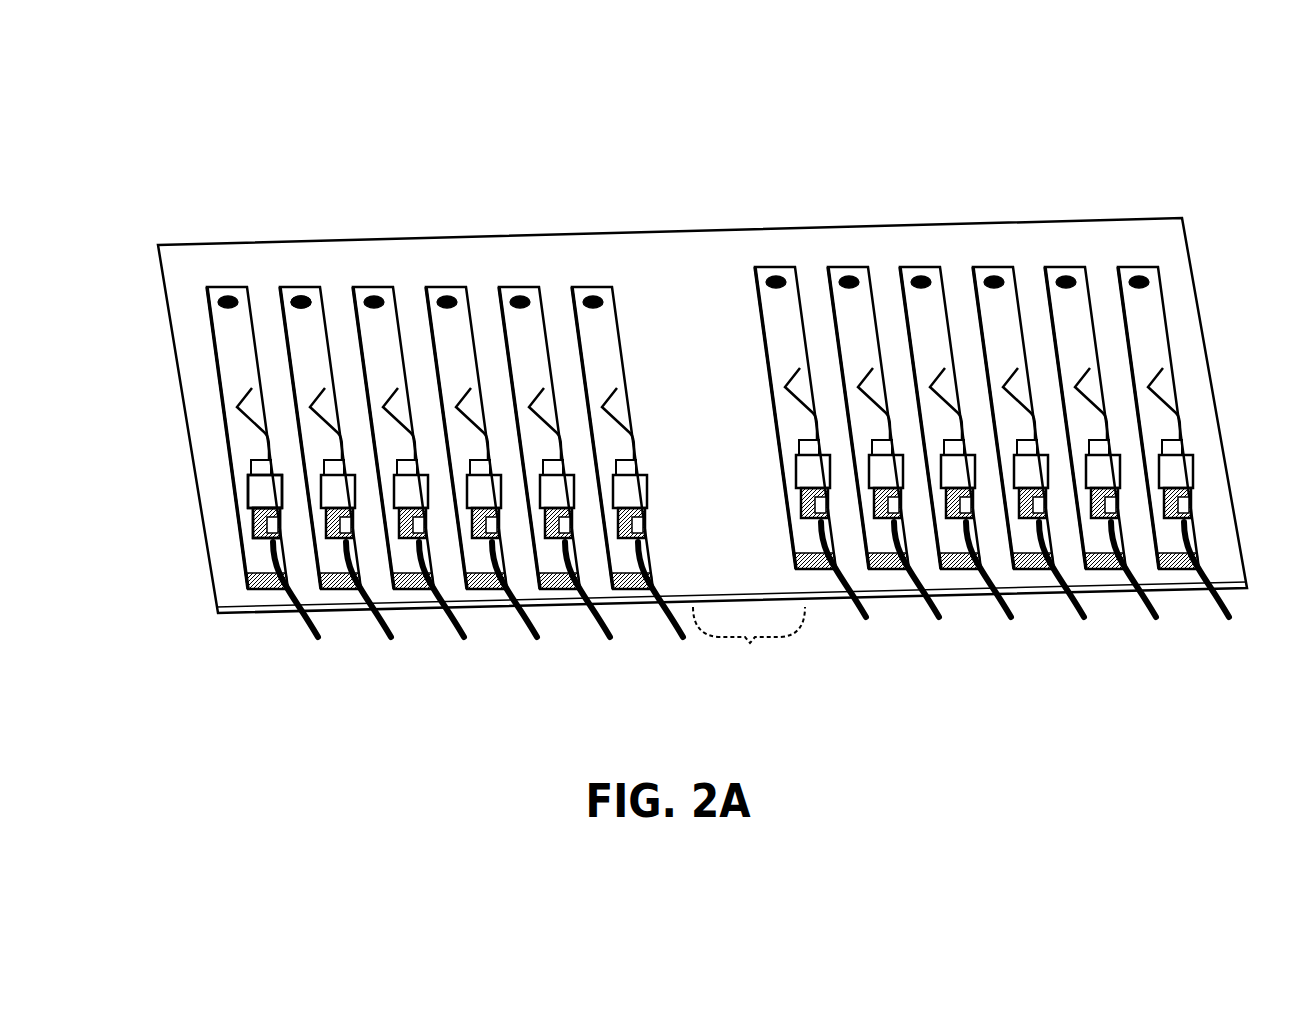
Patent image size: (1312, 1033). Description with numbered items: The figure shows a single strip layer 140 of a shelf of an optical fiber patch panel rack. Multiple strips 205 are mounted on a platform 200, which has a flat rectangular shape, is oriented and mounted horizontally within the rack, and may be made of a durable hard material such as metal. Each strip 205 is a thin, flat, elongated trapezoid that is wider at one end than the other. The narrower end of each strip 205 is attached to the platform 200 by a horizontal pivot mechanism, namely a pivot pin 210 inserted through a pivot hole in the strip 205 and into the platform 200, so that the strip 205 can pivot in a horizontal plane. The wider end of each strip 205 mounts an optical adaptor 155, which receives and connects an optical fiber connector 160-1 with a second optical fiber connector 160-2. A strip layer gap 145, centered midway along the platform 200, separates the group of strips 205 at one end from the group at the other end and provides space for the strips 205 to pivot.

The platform 200 is at (658, 233).
The strip 205 is at (184, 462).
The pivot pin 210 is at (305, 285).
The strip layer 140 is at (1117, 148).
The strip layer gap 145 is at (750, 669).
The optical adaptor 155 is at (230, 508).
The optical fiber connector 160-1 is at (243, 545).
The optical fiber connector 160-2 is at (222, 473).